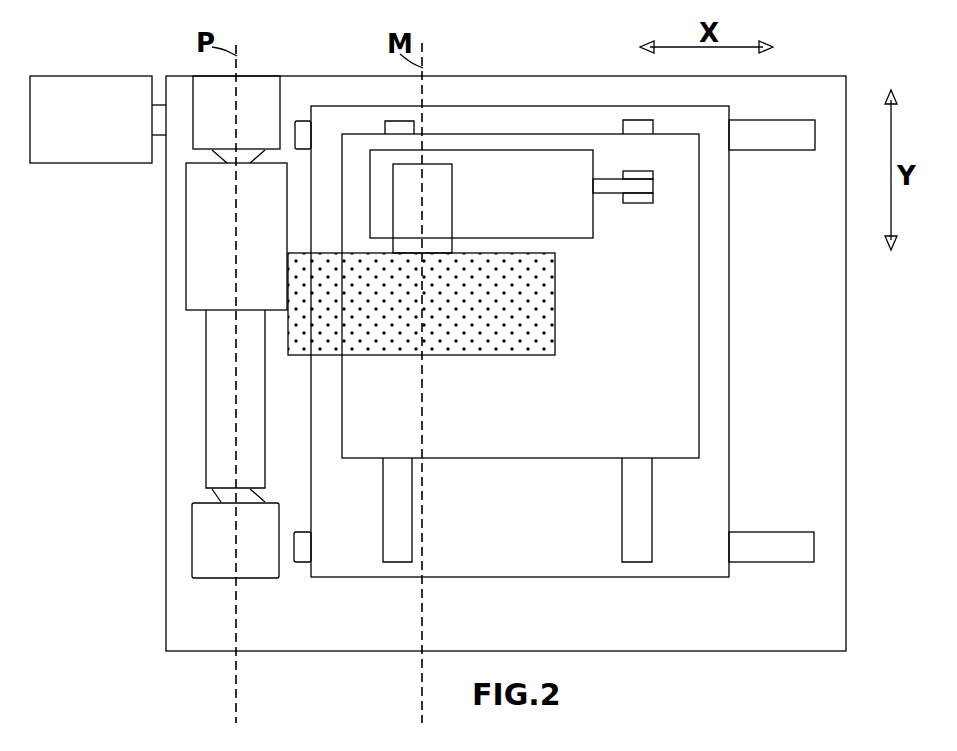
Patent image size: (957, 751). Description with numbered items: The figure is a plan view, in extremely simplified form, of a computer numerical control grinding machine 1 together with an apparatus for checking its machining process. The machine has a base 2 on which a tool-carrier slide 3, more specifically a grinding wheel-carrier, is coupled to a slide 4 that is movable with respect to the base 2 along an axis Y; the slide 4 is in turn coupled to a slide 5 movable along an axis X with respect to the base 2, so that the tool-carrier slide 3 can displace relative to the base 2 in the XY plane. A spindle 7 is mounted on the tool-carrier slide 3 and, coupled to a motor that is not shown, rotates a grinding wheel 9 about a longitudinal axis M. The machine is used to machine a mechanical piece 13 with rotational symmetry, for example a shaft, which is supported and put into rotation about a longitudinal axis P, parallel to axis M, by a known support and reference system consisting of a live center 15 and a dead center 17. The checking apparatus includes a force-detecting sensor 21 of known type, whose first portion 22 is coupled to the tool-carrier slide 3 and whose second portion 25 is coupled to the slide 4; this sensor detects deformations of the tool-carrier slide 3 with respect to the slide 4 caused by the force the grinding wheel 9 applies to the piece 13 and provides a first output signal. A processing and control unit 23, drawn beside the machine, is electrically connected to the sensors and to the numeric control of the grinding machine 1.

The grinding machine 1 is at (820, 54).
The base 2 is at (797, 451).
The tool-carrier slide 3 is at (507, 173).
The slide 4 is at (611, 150).
The slide 5 is at (713, 375).
The spindle 7 is at (437, 185).
The grinding wheel 9 is at (494, 338).
The mechanical piece 13 is at (220, 368).
The live center 15 is at (226, 156).
The dead center 17 is at (222, 490).
The force-detecting sensor 21 is at (651, 213).
The first portion 22 is at (611, 187).
The processing and control unit 23 is at (72, 138).
The second portion 25 is at (634, 202).